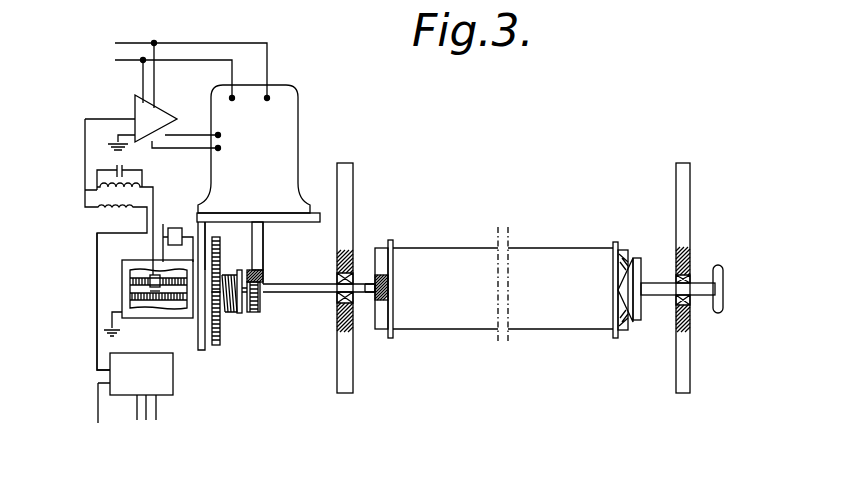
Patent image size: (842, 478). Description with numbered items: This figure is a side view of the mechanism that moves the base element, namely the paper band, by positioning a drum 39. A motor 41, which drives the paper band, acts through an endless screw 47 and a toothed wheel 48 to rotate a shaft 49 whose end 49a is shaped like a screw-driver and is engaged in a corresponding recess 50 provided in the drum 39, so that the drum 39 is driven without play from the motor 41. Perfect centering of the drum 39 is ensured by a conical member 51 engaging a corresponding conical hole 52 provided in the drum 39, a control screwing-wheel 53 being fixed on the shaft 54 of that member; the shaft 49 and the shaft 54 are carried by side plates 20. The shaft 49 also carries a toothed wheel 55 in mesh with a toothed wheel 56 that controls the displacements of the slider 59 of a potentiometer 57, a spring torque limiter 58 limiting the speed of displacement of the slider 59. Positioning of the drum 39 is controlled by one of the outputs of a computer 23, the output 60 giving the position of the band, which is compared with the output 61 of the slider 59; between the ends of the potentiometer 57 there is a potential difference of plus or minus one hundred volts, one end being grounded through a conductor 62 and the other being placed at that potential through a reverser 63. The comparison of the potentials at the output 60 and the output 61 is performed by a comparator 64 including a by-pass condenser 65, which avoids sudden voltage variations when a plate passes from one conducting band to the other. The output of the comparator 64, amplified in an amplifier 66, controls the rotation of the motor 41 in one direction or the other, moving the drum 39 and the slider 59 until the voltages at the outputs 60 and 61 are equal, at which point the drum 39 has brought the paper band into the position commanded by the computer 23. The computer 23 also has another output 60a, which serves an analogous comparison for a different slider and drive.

The side plates 20 is at (345, 207).
The computer 23 is at (165, 380).
The drum 39 is at (532, 310).
The motor 41 is at (278, 130).
The endless screw 47 is at (262, 280).
The toothed wheel 48 is at (260, 300).
The shaft 49 is at (296, 293).
The end of shaft 49a is at (392, 290).
The recess 50 is at (390, 283).
The conical member 51 is at (628, 285).
The conical hole 52 is at (622, 318).
The control screwing-wheel 53 is at (718, 265).
The shaft 54 is at (690, 298).
The toothed wheel 55 is at (226, 306).
The toothed wheel 56 is at (221, 341).
The potentiometer 57 is at (143, 308).
The spring torque limiter 58 is at (222, 276).
The slider 59 is at (152, 275).
The output 60 is at (97, 344).
The output 60a is at (99, 404).
The output 61 is at (155, 200).
The conductor 62 is at (146, 298).
The reverser 63 is at (175, 237).
The comparator 64 is at (116, 285).
The by-pass condenser 65 is at (121, 170).
The amplifier 66 is at (160, 118).